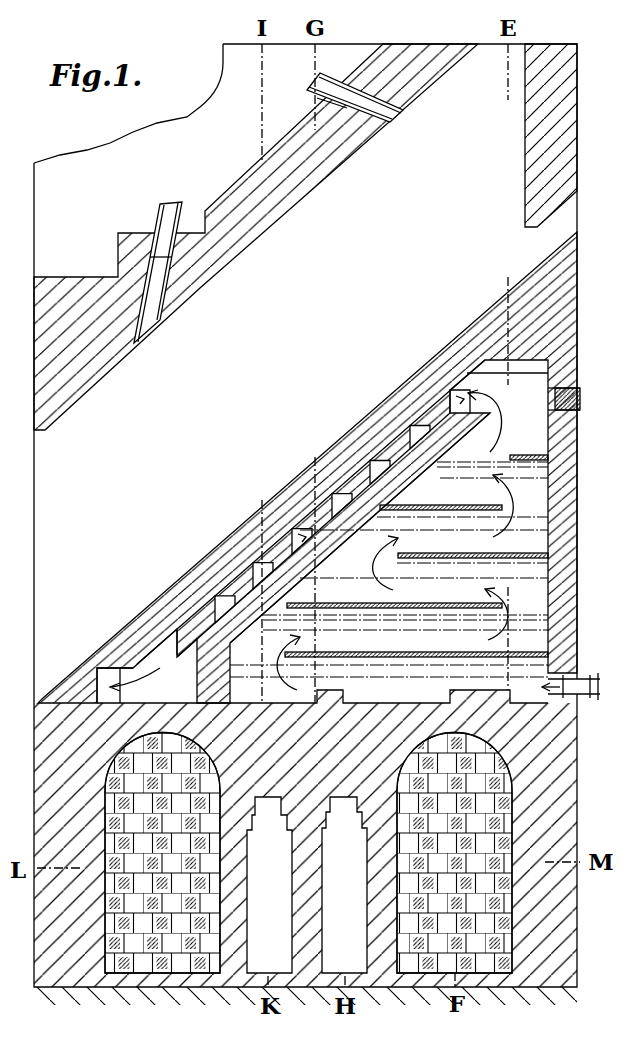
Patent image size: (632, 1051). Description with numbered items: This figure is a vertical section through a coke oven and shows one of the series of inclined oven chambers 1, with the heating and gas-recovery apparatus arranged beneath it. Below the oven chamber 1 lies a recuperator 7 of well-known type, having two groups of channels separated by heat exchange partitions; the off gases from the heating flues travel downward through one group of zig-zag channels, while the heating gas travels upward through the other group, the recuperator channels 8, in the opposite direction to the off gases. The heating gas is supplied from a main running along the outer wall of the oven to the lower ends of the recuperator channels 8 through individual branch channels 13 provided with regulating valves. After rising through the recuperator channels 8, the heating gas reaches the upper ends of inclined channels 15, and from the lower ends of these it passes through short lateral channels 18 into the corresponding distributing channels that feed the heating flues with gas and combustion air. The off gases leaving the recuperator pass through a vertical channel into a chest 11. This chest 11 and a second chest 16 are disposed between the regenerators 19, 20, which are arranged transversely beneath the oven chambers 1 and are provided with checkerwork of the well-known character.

The inclined oven chamber 1 is at (256, 237).
The recuperator 7 is at (548, 552).
The recuperator channel 8 is at (416, 556).
The chest 11 is at (344, 885).
The branch channel 13 is at (585, 699).
The inclined channel 15 is at (392, 452).
The chest 16 is at (269, 885).
The short lateral channel 18 is at (109, 666).
The regenerator 19 is at (400, 834).
The regenerator 20 is at (216, 845).